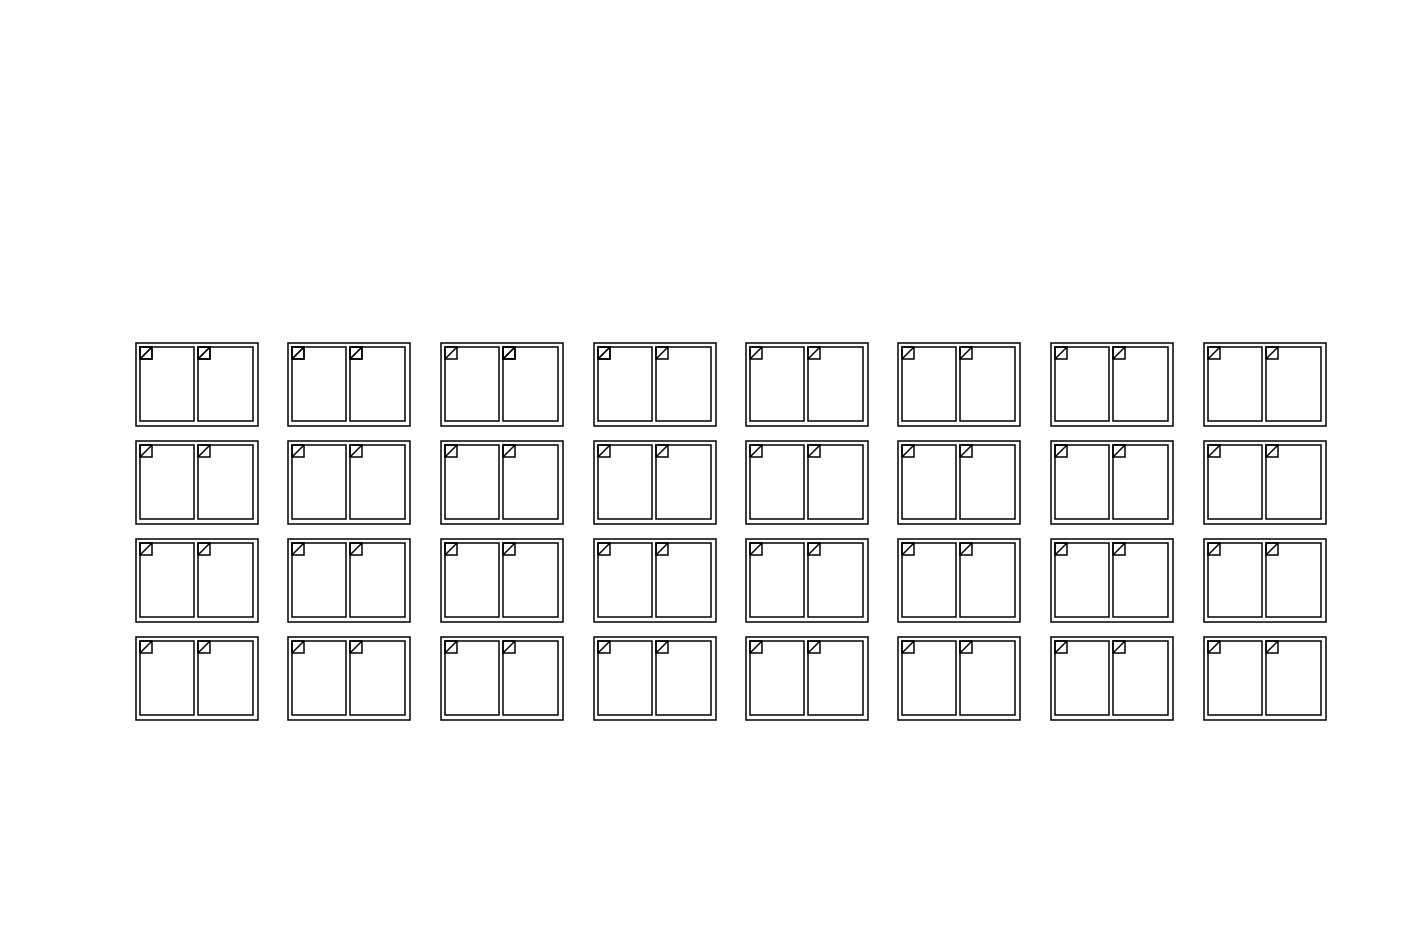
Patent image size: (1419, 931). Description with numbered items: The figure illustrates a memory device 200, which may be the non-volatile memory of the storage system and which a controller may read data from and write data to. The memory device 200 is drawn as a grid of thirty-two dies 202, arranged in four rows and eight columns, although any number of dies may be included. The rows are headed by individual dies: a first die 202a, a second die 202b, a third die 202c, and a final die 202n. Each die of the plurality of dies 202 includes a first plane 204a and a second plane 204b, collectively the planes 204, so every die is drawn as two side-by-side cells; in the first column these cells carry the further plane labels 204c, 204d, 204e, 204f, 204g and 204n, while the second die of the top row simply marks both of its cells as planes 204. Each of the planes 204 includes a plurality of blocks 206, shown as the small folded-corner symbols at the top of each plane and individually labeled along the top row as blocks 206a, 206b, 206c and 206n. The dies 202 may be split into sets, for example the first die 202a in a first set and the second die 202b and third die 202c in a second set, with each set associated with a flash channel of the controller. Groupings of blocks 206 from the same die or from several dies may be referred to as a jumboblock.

The memory device 200 is at (136, 68).
The dies 202 is at (410, 343).
The first die 202a is at (133, 385).
The second die 202b is at (133, 483).
The third die 202c is at (133, 581).
The die 202n is at (133, 679).
The planes 204 is at (336, 401).
The first plane 204a is at (190, 411).
The second plane 204b is at (202, 411).
The plane P2 204c is at (190, 509).
The plane P5 204d is at (202, 509).
The plane P4 204e is at (190, 607).
The plane P7 204f is at (202, 607).
The plane P6 204g is at (190, 705).
The plane Pn 204n is at (202, 705).
The blocks 206 is at (511, 347).
The block 206a is at (147, 347).
The block 206b is at (208, 347).
The block 206c is at (297, 347).
The block 206n is at (357, 347).